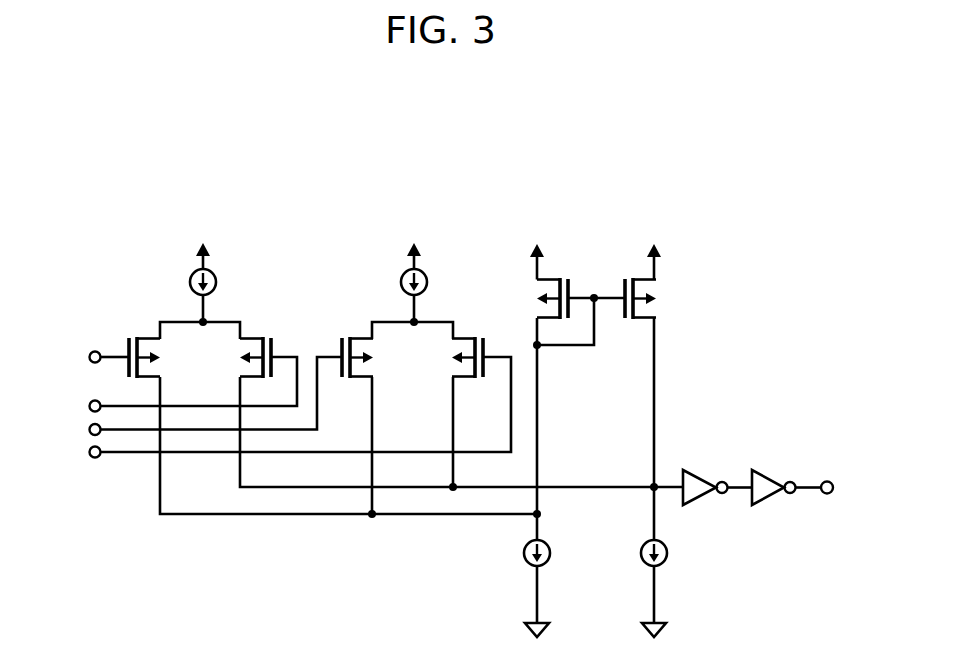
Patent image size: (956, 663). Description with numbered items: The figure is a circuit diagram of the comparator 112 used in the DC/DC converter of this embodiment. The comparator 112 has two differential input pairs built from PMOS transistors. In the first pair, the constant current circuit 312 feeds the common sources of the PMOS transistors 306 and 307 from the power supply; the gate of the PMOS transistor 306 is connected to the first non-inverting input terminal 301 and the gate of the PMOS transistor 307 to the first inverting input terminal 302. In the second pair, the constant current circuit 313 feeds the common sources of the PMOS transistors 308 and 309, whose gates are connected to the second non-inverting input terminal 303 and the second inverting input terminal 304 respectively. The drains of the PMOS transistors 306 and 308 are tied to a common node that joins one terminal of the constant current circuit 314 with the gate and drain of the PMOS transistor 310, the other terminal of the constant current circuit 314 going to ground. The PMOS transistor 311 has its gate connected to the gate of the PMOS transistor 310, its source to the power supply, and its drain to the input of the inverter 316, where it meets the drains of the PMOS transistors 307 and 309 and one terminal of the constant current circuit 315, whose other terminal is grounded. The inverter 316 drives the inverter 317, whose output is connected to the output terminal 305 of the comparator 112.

The comparator 112 is at (333, 189).
The first non-inverting input terminal 301 is at (86, 358).
The first inverting input terminal 302 is at (170, 387).
The second non-inverting input terminal 303 is at (192, 399).
The second inverting input terminal 304 is at (277, 411).
The output terminal 305 is at (828, 478).
The PMOS transistor 306 is at (140, 330).
The PMOS transistor 307 is at (256, 330).
The PMOS transistor 308 is at (356, 330).
The PMOS transistor 309 is at (470, 330).
The PMOS transistor 310 is at (556, 272).
The PMOS transistor 311 is at (633, 272).
The constant current circuit 312 is at (220, 270).
The constant current circuit 313 is at (434, 270).
The constant current circuit 314 is at (523, 552).
The constant current circuit 315 is at (668, 557).
The inverter 316 is at (700, 470).
The inverter 317 is at (768, 470).